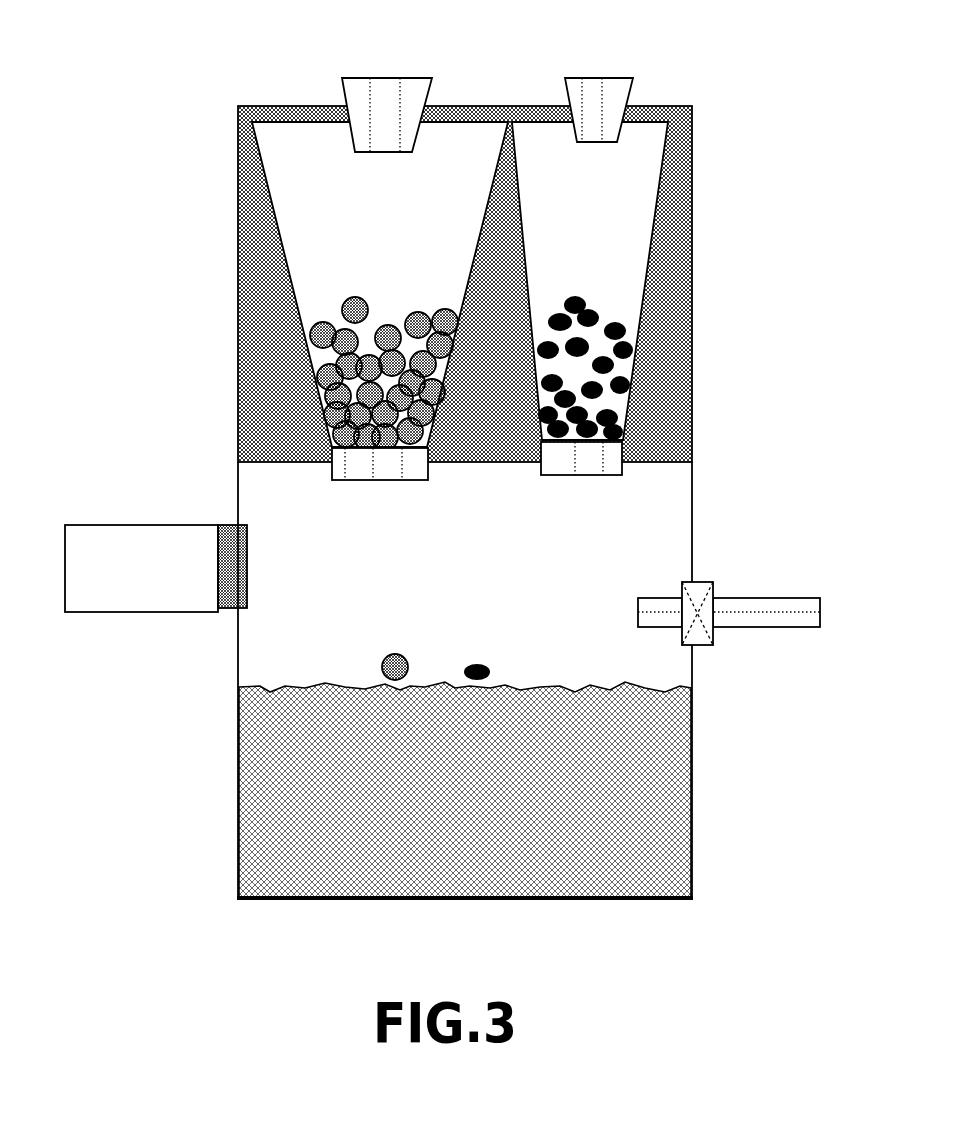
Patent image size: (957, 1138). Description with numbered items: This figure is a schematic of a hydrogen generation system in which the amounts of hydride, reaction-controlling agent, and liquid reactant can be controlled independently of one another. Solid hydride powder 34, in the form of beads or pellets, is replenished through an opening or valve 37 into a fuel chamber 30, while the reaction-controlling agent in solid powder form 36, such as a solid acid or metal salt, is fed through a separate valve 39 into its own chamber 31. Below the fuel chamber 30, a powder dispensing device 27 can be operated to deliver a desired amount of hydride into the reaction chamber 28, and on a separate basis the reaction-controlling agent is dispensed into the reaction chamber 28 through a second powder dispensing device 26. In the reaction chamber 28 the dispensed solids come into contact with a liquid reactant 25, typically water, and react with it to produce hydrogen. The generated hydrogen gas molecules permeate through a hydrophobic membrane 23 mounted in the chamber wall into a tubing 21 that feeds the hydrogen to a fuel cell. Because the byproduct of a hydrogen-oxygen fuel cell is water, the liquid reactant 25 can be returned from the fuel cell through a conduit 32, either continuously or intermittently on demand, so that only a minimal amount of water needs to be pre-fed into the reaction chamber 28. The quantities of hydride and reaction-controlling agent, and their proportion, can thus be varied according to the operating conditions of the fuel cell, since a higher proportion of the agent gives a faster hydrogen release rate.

The tubing 21 is at (132, 543).
The hydrophobic membrane 23 is at (230, 578).
The liquid reactant 25 is at (620, 793).
The powder dispensing device 26 is at (593, 453).
The powder dispensing device 27 is at (410, 460).
The reaction chamber 28 is at (555, 578).
The fuel chamber 30 is at (355, 238).
The chamber 31 is at (612, 242).
The conduit 32 is at (745, 615).
The solid hydride powder 34 is at (312, 347).
The reaction-controlling agent in solid powder form 36 is at (627, 387).
The opening or valve 37 is at (385, 82).
The valve 39 is at (620, 98).